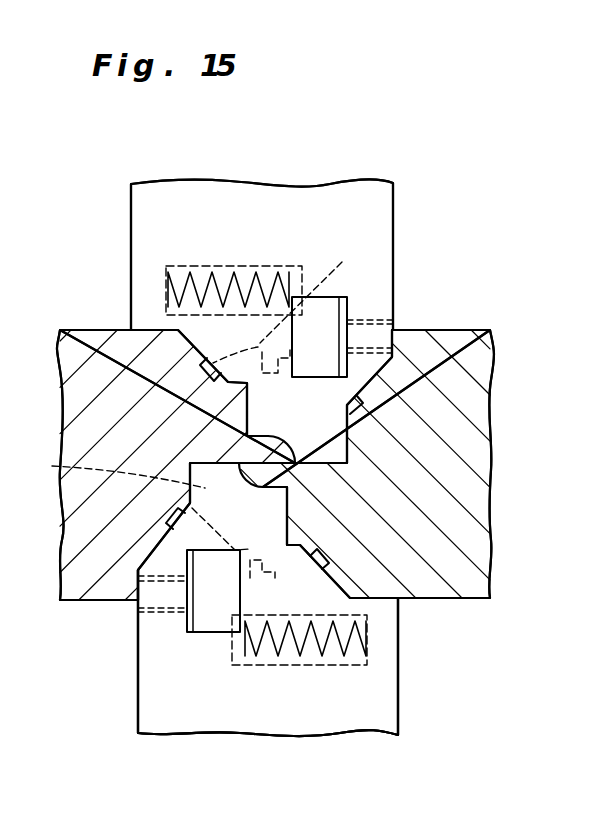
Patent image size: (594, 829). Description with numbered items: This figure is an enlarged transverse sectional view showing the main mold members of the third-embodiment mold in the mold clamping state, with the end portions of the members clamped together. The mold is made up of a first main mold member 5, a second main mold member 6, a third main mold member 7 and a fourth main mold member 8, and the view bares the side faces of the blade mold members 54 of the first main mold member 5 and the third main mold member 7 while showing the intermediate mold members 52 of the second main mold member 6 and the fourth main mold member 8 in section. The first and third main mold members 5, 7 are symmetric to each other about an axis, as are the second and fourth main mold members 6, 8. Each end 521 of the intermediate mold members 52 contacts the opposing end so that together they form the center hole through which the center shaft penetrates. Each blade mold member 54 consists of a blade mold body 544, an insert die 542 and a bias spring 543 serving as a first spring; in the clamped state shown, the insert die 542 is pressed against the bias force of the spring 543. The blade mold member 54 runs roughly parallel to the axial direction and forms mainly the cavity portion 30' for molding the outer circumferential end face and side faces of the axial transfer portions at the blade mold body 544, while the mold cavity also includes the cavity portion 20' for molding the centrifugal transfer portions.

The first main mold member 5 is at (407, 729).
The second main mold member 6 is at (121, 326).
The third main mold member 7 is at (398, 180).
The fourth main mold member 8 is at (468, 326).
The intermediate mold member 52 is at (60, 600).
The end of intermediate mold member 521 is at (285, 437).
The blade mold member 54 is at (337, 195).
The insert die 542 is at (327, 317).
The bias spring 543 is at (328, 647).
The blade mold body 544 is at (192, 720).
The cavity portion 20' is at (297, 462).
The cavity portion 30' is at (195, 405).